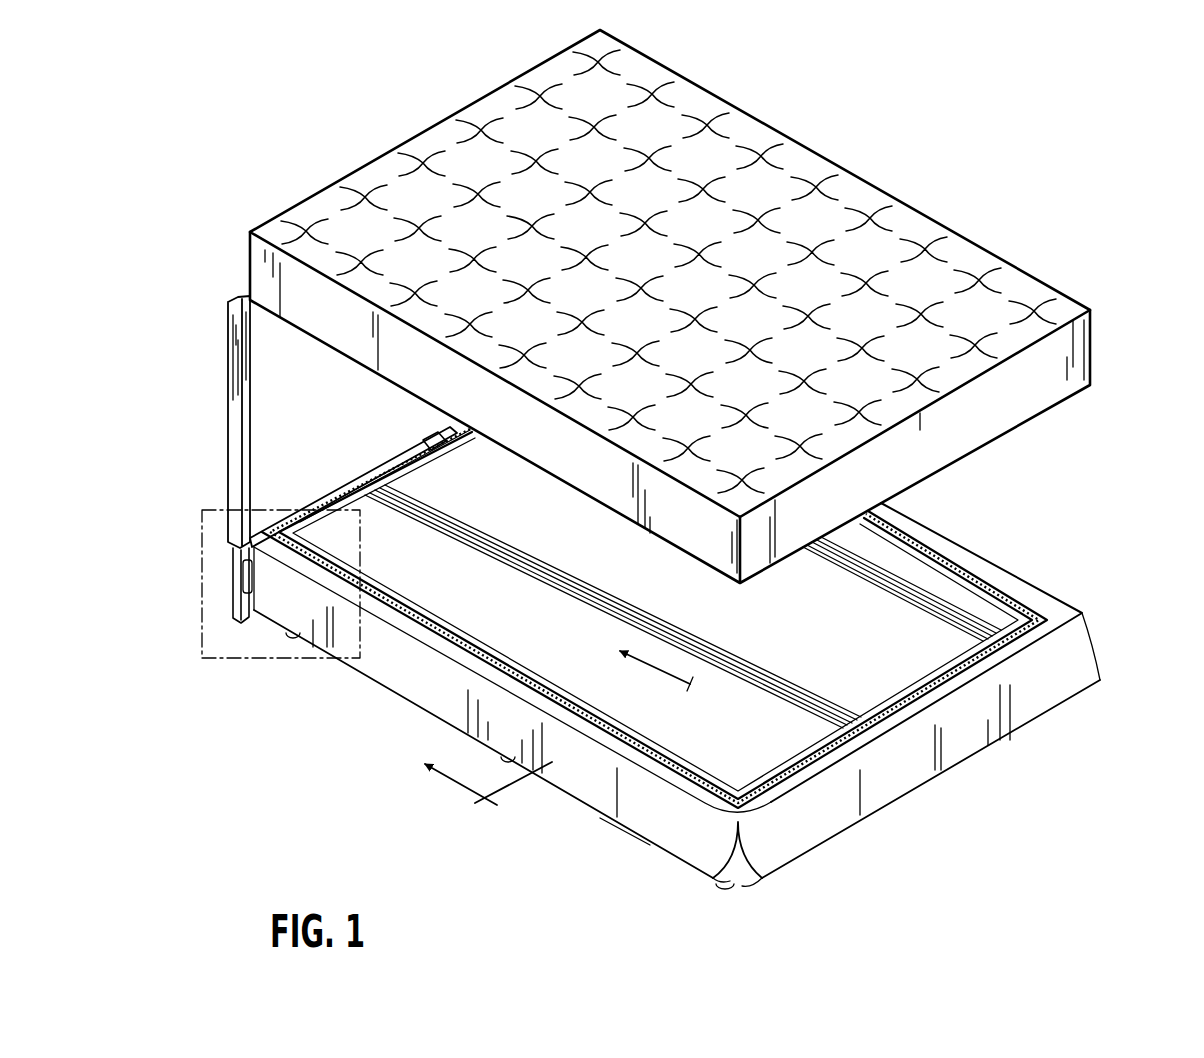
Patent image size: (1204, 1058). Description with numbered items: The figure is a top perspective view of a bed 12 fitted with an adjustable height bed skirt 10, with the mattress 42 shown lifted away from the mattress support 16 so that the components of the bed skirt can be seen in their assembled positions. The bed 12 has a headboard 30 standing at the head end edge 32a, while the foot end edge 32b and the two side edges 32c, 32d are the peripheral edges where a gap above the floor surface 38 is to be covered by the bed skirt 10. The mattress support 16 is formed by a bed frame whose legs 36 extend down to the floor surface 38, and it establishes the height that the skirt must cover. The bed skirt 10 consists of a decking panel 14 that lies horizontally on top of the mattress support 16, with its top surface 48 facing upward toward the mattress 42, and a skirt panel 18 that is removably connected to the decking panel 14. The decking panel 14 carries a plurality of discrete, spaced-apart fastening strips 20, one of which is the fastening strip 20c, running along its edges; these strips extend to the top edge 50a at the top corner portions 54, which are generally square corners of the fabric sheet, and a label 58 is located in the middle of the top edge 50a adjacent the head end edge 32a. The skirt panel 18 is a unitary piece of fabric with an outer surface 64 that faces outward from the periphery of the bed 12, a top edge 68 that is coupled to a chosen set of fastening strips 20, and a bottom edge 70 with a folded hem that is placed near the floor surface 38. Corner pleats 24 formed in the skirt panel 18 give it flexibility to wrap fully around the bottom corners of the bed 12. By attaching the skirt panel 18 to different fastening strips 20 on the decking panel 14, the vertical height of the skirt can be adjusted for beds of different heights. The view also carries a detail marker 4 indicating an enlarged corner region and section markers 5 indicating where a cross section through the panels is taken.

The adjustable height bed skirt 10 is at (974, 545).
The bed 12 is at (1130, 458).
The decking panel 14 is at (969, 598).
The mattress support 16 is at (723, 890).
The skirt panel 18 is at (1046, 722).
The fastening strips 20 is at (535, 677).
The fastening strip 20c is at (469, 643).
The corner pleats 24 is at (746, 873).
The headboard 30 is at (225, 372).
The head end edge 32a is at (300, 536).
The foot end edge 32b is at (913, 797).
The side edge 32c is at (441, 722).
The side edge 32d is at (1065, 606).
The legs 36 is at (294, 641).
The floor surface 38 is at (356, 720).
The mattress 42 is at (810, 150).
The top surface 48 is at (813, 643).
The top edge 50a is at (388, 463).
The top corner portions 54 is at (296, 550).
The label 58 is at (436, 437).
The outer surface 64 is at (689, 830).
The top edge 68 is at (448, 636).
The bottom edge 70 is at (611, 821).
The detail view 4 indicator 4 is at (235, 660).
The section view 5 indicator 5 is at (573, 748).